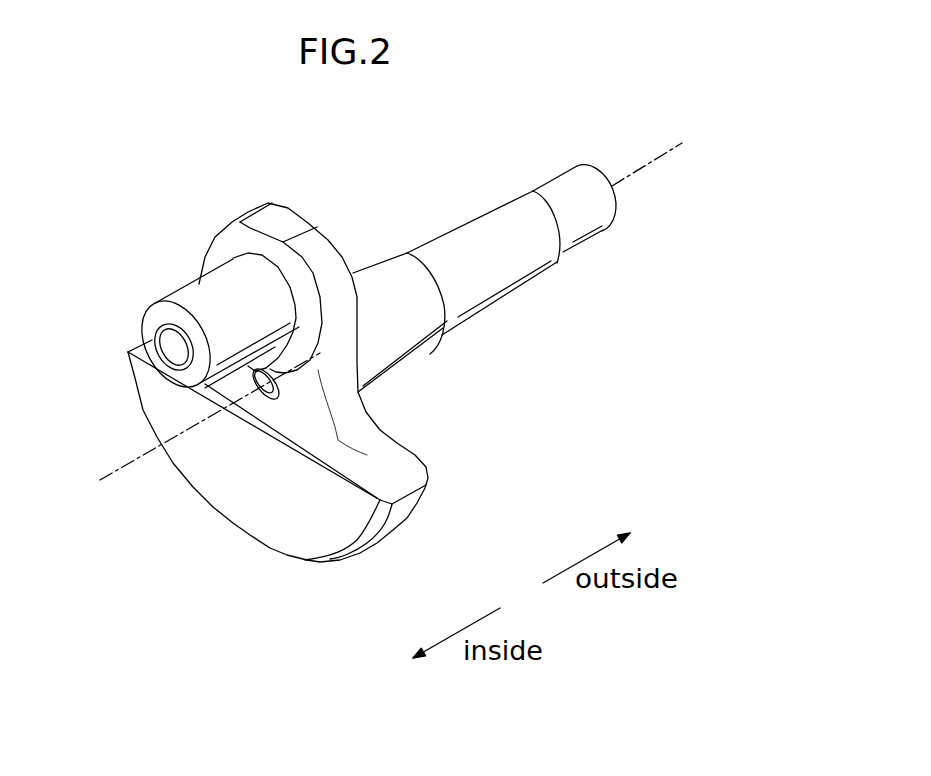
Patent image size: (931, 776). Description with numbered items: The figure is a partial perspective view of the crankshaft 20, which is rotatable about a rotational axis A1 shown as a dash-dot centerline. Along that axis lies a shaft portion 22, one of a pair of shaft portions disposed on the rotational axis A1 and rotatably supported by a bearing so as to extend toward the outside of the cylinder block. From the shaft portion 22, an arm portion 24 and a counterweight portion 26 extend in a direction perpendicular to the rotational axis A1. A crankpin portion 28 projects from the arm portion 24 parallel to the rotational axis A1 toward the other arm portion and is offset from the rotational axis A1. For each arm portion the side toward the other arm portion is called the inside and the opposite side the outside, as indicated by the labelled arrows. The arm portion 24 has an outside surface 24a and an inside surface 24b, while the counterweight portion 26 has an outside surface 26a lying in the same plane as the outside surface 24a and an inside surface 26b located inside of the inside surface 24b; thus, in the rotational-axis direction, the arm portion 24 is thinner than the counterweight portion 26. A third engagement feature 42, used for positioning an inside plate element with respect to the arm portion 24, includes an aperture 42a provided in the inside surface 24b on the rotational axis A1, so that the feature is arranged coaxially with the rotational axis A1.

The crankshaft 20 is at (552, 178).
The shaft portion 22 is at (438, 363).
The arm portion 24 is at (304, 435).
The outside surface 24a is at (357, 357).
The inside surface 24b is at (272, 422).
The counterweight portion 26 is at (305, 415).
The outside surface 26a is at (402, 441).
The inside surface 26b is at (318, 526).
The crankpin portion 28 is at (192, 298).
The third engagement feature 42 is at (208, 475).
The aperture 42a is at (252, 400).
The rotational axis A1 is at (650, 162).